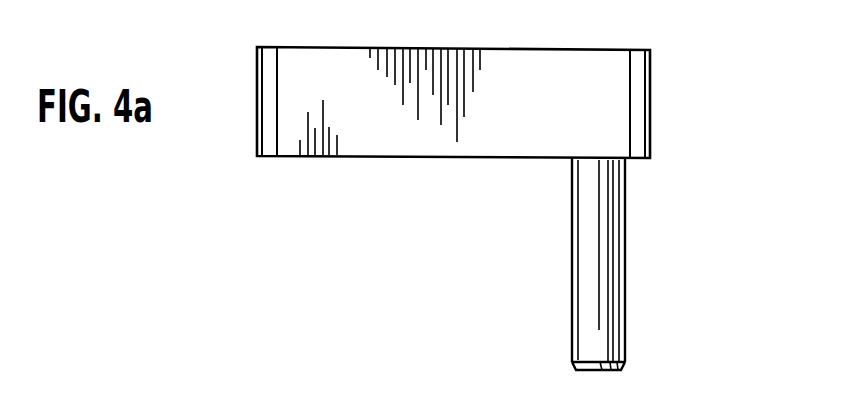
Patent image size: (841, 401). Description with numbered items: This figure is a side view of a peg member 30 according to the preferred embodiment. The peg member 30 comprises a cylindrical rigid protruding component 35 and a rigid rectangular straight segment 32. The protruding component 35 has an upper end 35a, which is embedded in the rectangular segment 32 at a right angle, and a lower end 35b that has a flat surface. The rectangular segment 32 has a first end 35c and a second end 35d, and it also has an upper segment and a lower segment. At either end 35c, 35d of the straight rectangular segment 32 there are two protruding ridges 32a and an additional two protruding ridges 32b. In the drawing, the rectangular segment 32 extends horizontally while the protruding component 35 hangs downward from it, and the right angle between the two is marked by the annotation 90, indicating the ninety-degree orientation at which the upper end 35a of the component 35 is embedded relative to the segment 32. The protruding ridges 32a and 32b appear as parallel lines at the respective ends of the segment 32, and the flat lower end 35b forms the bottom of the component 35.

The peg member 30 is at (257, 94).
The rectangular segment 32 is at (559, 49).
The protruding ridges 32a is at (257, 129).
The protruding ridges 32b is at (650, 110).
The cylindrical rigid protruding component 35 is at (578, 302).
The upper end 35a is at (625, 210).
The lower end 35b is at (575, 367).
The first end 35c is at (652, 160).
The second end 35d is at (277, 158).
The 90 degree angle 90 is at (571, 235).